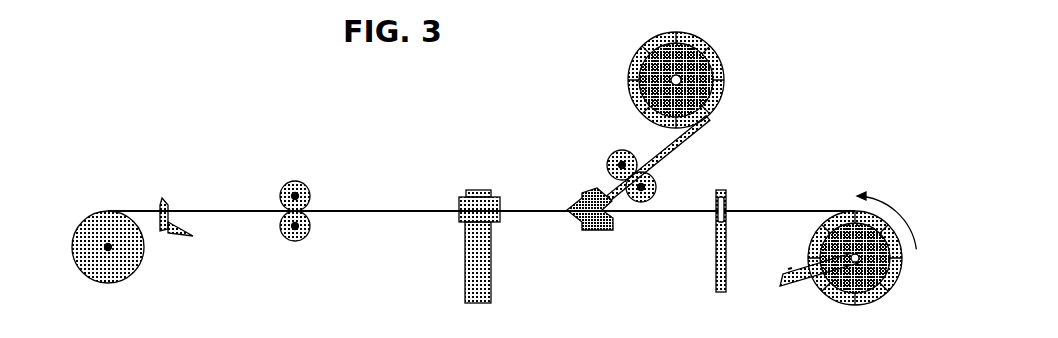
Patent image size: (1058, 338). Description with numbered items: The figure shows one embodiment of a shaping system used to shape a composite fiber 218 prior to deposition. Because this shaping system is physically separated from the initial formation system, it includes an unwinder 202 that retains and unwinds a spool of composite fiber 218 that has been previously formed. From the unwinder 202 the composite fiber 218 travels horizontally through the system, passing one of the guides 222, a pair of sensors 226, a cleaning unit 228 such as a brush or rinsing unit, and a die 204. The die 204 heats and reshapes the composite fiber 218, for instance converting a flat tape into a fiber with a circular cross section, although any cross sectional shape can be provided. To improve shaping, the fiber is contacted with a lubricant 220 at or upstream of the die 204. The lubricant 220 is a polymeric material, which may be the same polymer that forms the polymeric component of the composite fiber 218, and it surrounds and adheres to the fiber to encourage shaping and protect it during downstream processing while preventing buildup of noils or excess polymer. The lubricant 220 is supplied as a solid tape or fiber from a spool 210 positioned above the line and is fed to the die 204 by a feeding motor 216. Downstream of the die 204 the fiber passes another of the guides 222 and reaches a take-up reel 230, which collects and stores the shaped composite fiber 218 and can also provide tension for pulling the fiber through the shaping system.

The unwinder 202 is at (870, 296).
The die 204 is at (580, 200).
The spool 210 is at (642, 50).
The feeding motor 216 is at (613, 152).
The composite fiber 218 is at (402, 211).
The lubricant 220 is at (680, 143).
The guides 222 is at (160, 200).
The sensors 226 is at (284, 186).
The cleaning units 228 is at (457, 257).
The take-up reel 230 is at (72, 247).